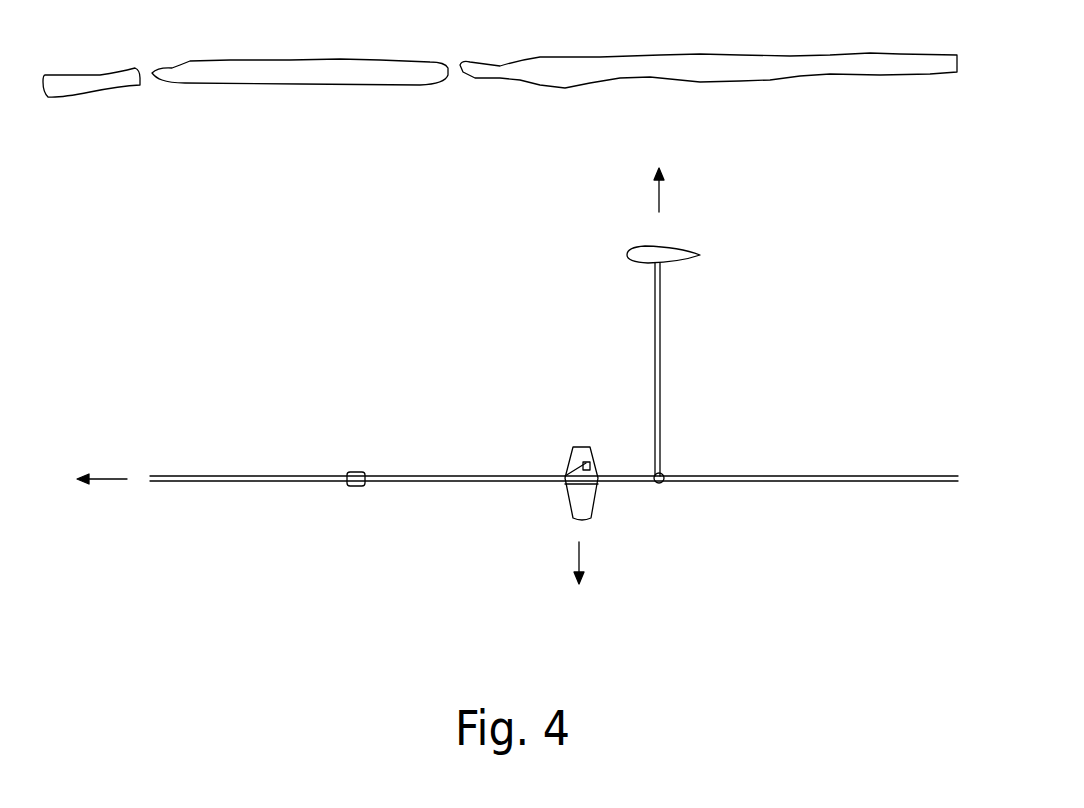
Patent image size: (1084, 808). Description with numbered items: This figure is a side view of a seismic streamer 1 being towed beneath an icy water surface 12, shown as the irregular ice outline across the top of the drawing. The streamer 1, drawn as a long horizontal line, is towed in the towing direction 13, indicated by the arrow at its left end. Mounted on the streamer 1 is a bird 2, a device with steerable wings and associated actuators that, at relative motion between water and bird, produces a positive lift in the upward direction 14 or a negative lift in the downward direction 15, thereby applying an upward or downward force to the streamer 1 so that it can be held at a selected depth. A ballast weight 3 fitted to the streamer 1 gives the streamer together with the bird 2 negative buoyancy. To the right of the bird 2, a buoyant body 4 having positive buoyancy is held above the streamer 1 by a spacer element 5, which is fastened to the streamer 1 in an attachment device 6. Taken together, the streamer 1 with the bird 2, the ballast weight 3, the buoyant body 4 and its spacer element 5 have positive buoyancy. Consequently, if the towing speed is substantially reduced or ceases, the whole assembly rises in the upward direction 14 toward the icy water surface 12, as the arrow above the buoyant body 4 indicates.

The seismic streamer 1 is at (260, 485).
The bird 2 is at (565, 468).
The ballast weight 3 is at (357, 470).
The buoyant body 4 is at (643, 252).
The spacer element 5 is at (660, 361).
The attachment device 6 is at (660, 485).
The icy water surface 12 is at (273, 84).
The towing direction 13 is at (102, 464).
The upward direction 14 is at (676, 190).
The downward direction 15 is at (602, 563).